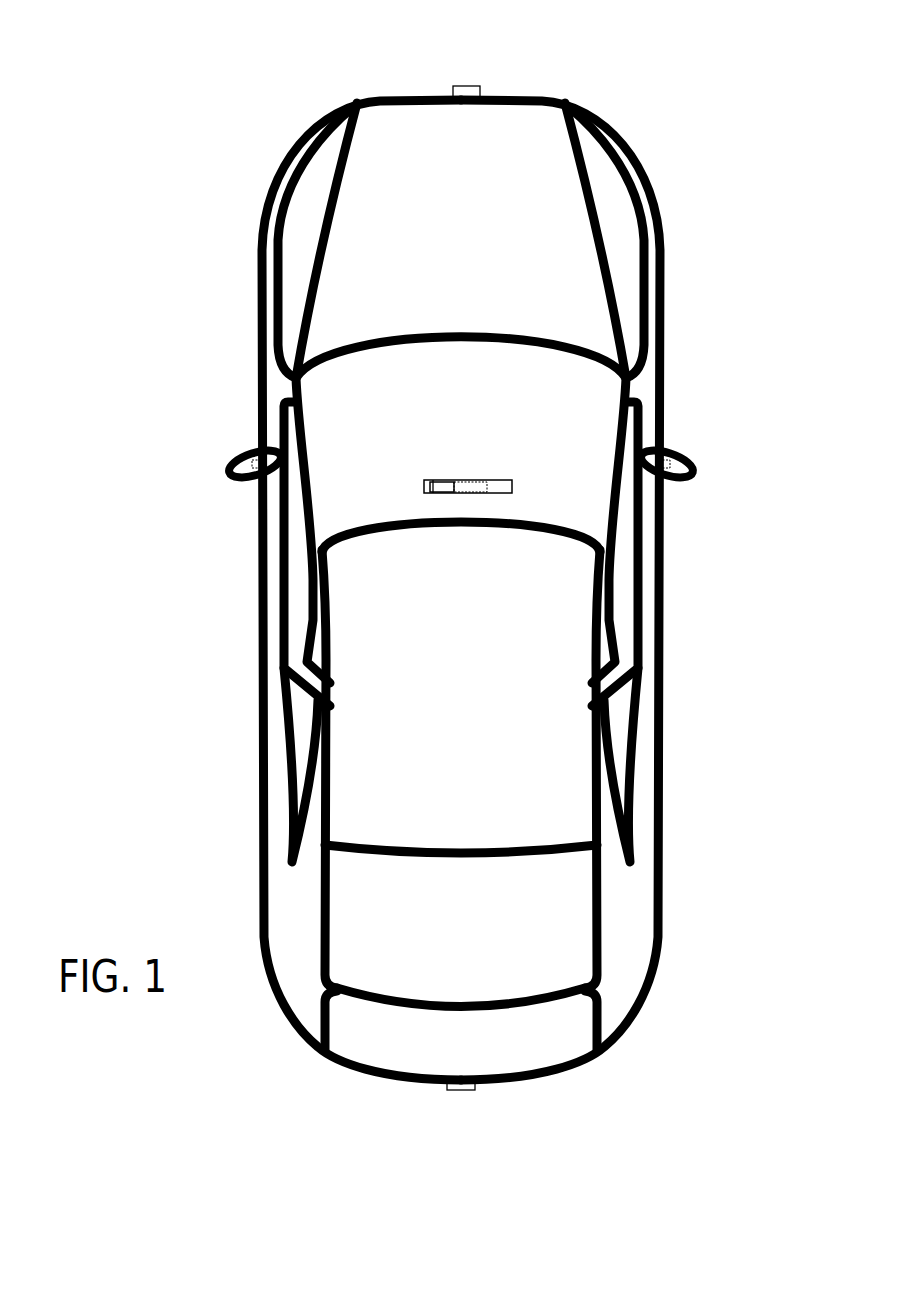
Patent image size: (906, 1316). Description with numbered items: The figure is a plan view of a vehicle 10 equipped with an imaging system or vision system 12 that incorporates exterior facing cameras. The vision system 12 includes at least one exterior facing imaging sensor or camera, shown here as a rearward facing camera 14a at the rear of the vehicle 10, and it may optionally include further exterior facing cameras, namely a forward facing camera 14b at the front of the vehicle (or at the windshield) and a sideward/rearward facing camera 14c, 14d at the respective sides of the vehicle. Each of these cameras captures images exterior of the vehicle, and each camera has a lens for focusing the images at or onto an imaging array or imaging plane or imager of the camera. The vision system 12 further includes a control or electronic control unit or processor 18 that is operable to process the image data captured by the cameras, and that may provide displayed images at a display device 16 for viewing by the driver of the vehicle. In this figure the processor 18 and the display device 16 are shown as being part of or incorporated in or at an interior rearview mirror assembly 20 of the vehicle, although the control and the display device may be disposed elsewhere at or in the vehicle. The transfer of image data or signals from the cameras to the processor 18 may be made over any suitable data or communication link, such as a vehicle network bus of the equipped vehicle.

The vehicle 10 is at (208, 188).
The vision system 12 is at (412, 1110).
The rearward facing camera 14a is at (467, 1089).
The forward facing camera 14b is at (470, 86).
The sideward/rearward facing camera 14c is at (248, 460).
The sideward/rearward facing camera 14d is at (672, 463).
The display device 16 is at (443, 482).
The electronic control unit 18 is at (468, 486).
The interior rearview mirror assembly 20 is at (513, 480).